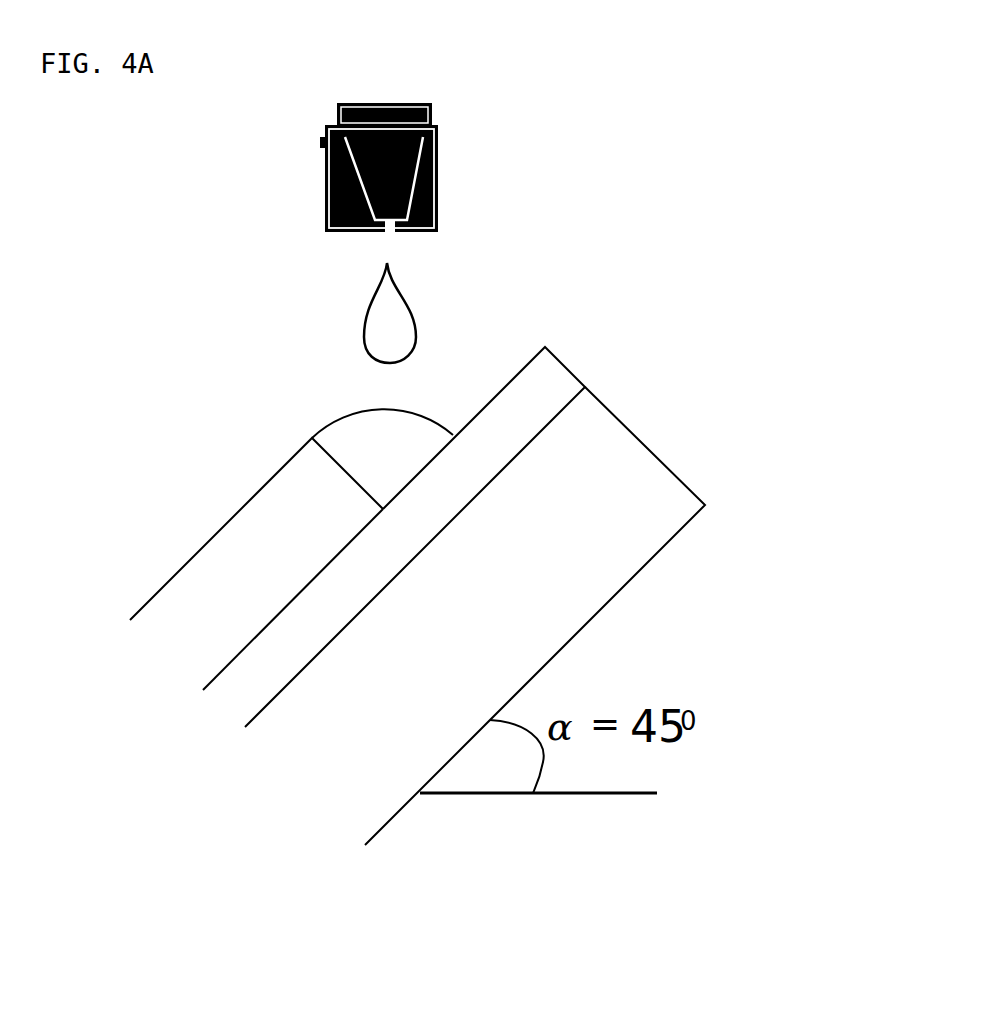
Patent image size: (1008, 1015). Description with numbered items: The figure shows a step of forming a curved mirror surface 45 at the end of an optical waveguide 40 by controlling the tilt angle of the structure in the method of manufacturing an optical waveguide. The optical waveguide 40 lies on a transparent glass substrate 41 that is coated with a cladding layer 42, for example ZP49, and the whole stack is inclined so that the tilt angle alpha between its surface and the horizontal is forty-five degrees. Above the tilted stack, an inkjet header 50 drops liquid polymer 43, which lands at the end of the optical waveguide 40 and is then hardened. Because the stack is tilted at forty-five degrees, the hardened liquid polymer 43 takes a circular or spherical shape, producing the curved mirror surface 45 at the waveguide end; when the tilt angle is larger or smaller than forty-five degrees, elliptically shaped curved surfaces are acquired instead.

The optical waveguide 40 is at (242, 553).
The transparent glass substrate 41 is at (620, 512).
The cladding layer 42 is at (562, 385).
The liquid polymer 43 is at (410, 309).
The curved mirror surface 45 is at (362, 437).
The inkjet header 50 is at (452, 195).